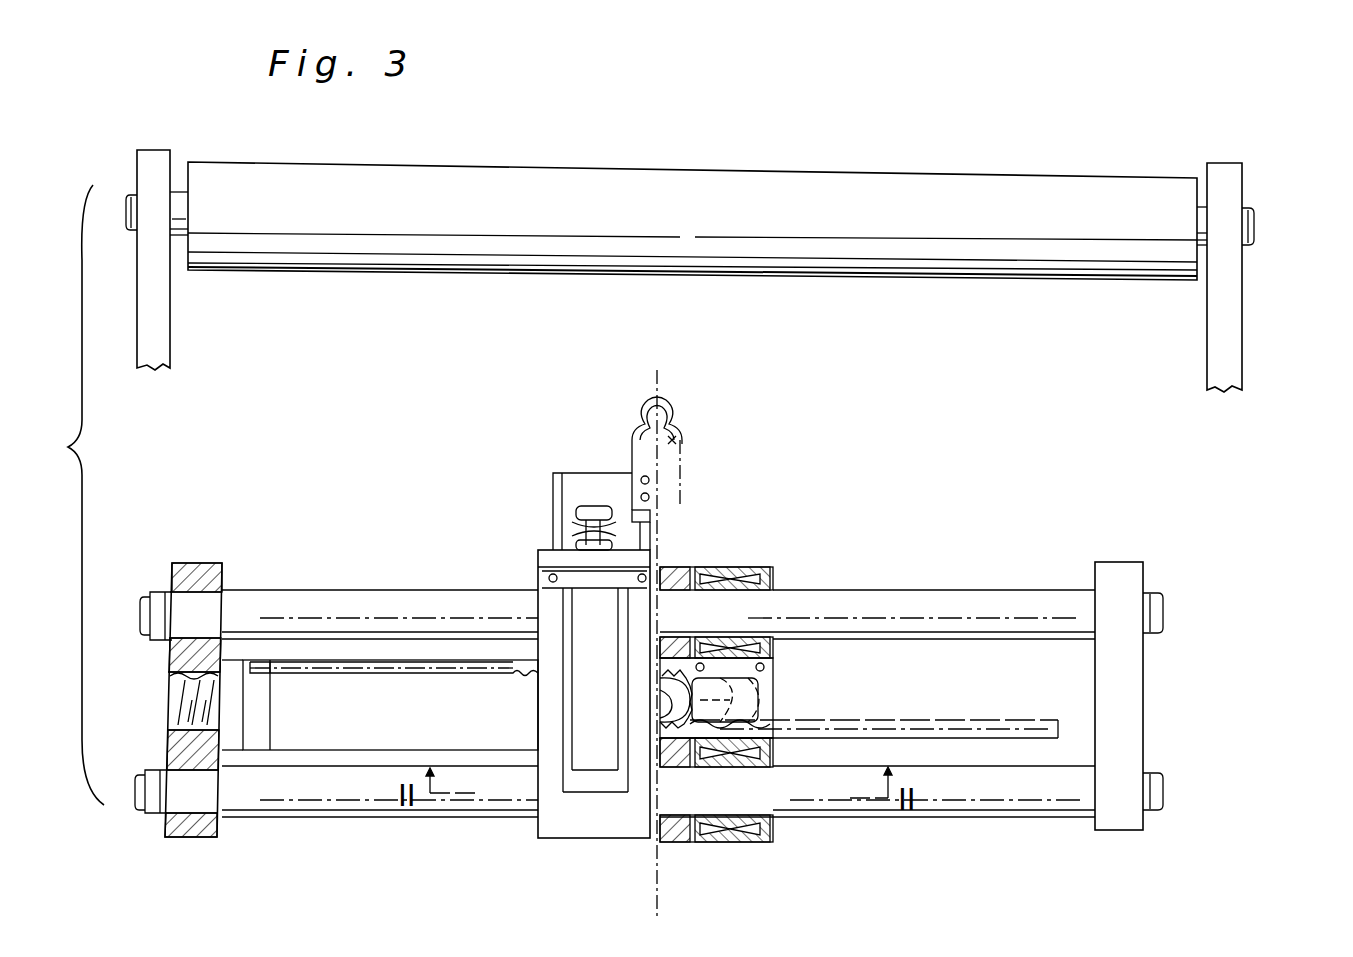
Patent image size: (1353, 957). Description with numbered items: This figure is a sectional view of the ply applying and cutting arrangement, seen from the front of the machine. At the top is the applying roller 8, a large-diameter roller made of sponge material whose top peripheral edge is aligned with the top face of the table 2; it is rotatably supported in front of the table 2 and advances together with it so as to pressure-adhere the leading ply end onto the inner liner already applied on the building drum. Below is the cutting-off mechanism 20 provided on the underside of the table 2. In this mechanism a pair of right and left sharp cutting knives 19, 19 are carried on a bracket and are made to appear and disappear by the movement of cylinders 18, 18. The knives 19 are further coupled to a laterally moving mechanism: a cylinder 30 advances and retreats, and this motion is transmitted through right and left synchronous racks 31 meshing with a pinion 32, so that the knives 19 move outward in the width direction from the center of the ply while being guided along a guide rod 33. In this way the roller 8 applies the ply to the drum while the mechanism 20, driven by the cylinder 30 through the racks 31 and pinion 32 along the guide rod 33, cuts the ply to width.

The table 2 is at (165, 343).
The applying roller 8 is at (985, 186).
The cylinder 18 is at (595, 785).
The cutting knife 19 is at (632, 440).
The cutting-off mechanism 20 is at (1046, 583).
The cylinder 30 is at (508, 728).
The synchronous rack 31 is at (430, 660).
The pinion 32 is at (765, 694).
The guide rod 33 is at (948, 590).